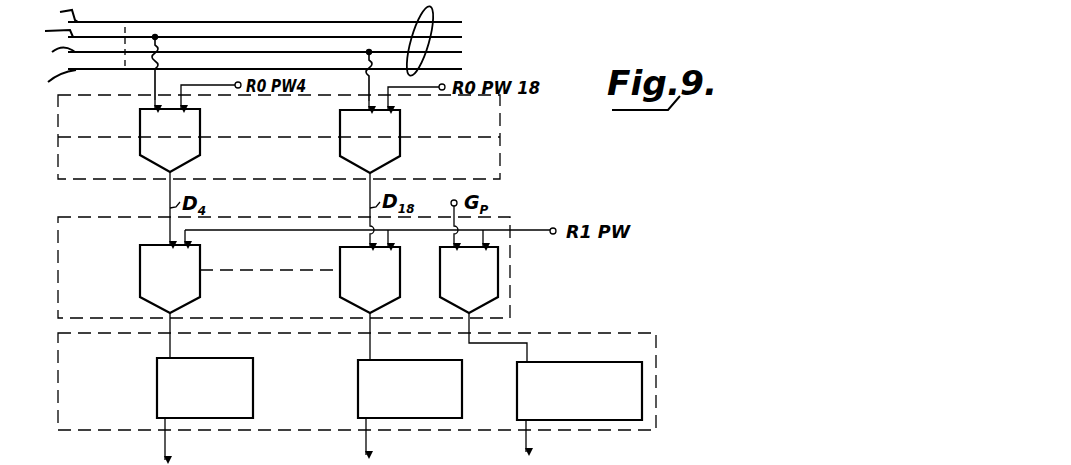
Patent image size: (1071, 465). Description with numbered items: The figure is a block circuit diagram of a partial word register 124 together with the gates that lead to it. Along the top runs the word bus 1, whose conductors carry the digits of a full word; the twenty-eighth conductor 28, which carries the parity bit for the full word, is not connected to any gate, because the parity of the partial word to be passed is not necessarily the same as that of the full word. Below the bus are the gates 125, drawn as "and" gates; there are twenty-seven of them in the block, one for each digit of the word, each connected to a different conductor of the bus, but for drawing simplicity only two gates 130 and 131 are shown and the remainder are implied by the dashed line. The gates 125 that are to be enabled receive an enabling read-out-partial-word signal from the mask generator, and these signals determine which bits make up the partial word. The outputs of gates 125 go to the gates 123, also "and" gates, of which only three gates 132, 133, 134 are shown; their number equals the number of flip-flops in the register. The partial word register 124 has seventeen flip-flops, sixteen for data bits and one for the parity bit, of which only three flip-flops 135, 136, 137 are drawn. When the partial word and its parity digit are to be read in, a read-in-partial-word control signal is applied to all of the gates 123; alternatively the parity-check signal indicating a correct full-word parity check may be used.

The word bus 1 is at (432, 13).
The 28th conductor 28 is at (445, 10).
The gates 125 is at (500, 170).
The gates 123 is at (510, 300).
The partial word register 124 is at (656, 383).
The "and" gate 130 is at (200, 124).
The "and" gate 131 is at (400, 123).
The "and" gate 132 is at (200, 260).
The "and" gate 133 is at (340, 262).
The "and" gate 134 is at (440, 272).
The flip-flop 135 is at (253, 368).
The flip-flop 136 is at (462, 372).
The flip-flop 137 is at (585, 362).